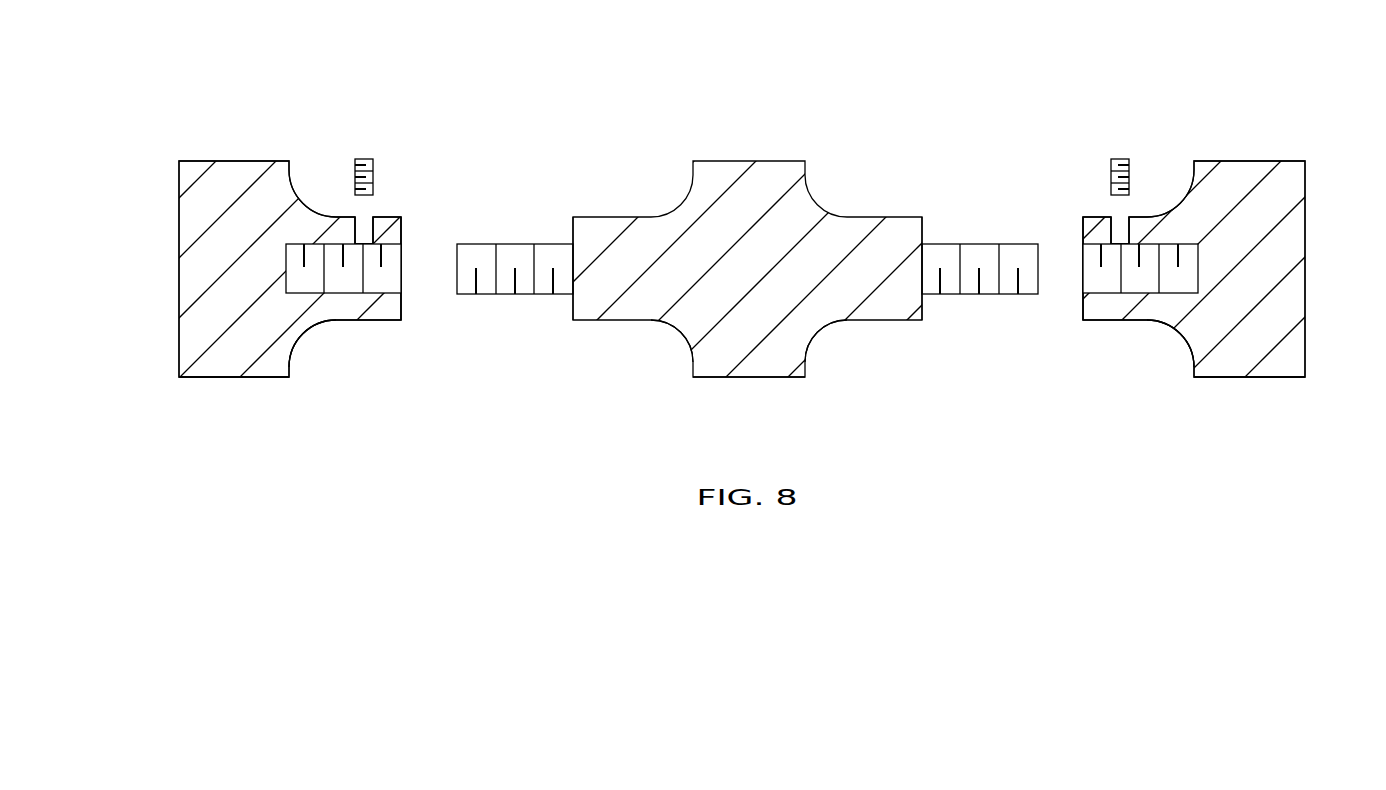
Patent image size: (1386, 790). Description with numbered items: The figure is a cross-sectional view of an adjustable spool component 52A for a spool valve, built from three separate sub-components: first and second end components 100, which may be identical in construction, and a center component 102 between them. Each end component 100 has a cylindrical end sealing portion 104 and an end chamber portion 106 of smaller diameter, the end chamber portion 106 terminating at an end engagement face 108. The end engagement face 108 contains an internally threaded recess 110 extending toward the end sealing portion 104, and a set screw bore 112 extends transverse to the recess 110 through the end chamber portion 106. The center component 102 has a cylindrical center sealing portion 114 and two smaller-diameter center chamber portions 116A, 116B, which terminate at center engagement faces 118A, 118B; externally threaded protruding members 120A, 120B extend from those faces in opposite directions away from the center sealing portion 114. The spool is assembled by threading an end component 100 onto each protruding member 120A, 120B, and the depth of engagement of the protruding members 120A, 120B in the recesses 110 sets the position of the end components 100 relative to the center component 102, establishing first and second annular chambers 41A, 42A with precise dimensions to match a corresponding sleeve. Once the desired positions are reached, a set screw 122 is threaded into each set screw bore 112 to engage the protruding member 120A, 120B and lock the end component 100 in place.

The adjustable spool component 52A is at (934, 75).
The first annular chamber 41A is at (471, 385).
The second annular chamber 42A is at (1006, 404).
The end component 100 is at (237, 160).
The center component 102 is at (743, 190).
The end sealing portion 104 is at (237, 378).
The end chamber portion 106 is at (294, 346).
The end engagement face 108 is at (403, 304).
The internally threaded recess 110 is at (342, 294).
The set screw bore 112 is at (362, 225).
The center sealing portion 114 is at (752, 377).
The center chamber portion 116A is at (682, 330).
The center chamber portion 116B is at (820, 330).
The center engagement face 118A is at (573, 229).
The center engagement face 118B is at (922, 229).
The externally threaded protruding member 120A is at (527, 295).
The externally threaded protruding member 120B is at (990, 295).
The set screw 122 is at (367, 157).